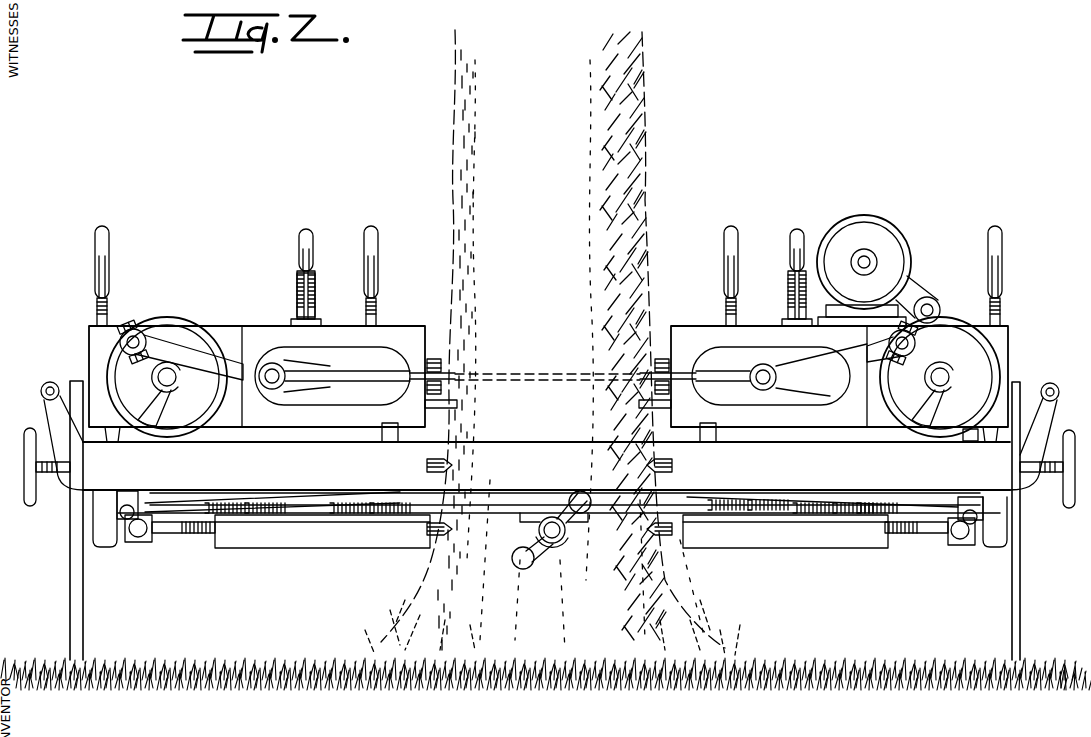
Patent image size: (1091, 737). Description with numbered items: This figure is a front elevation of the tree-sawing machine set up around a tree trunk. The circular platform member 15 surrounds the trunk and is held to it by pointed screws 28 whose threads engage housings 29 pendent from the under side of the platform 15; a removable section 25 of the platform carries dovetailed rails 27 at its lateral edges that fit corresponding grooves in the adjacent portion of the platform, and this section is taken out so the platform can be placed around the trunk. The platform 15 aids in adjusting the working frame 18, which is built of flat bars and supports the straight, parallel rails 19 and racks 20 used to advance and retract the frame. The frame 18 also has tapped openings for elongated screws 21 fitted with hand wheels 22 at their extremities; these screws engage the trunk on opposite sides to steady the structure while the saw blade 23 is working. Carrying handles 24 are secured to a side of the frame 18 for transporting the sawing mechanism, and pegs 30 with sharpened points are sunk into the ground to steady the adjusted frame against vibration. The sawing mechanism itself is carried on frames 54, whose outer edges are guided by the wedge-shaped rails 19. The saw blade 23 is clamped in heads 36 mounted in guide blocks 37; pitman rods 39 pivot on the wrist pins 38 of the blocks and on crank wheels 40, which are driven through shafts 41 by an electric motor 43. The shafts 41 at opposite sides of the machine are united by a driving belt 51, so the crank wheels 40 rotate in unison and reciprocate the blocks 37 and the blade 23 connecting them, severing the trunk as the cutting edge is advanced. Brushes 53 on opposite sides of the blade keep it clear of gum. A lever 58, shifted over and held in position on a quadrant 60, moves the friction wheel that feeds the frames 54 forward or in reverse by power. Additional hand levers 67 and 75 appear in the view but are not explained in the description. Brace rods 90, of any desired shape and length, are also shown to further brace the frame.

The platform member 15 is at (524, 495).
The working frame 18 is at (548, 466).
The rails 19 is at (111, 443).
The racks 20 is at (390, 443).
The elongated screws 21 is at (427, 463).
The hand wheels 22 is at (25, 486).
The saw blade 23 is at (477, 367).
The carrying handles 24 is at (41, 391).
The removable section 25 is at (505, 514).
The dovetailed rails 27 is at (427, 531).
The pointed screws 28 is at (175, 534).
The housings 29 is at (340, 552).
The pegs 30 is at (80, 597).
The heads 36 is at (320, 382).
The guide blocks 37 is at (312, 396).
The wrist pins 38 is at (270, 388).
The pitman rods 39 is at (214, 379).
The crank wheels 40 is at (172, 328).
The shafts 41 is at (162, 383).
The electric motor 43 is at (906, 255).
The driving belt 51 is at (443, 409).
The brushes 53 is at (441, 354).
The frames 54 is at (91, 360).
The lever 58 is at (313, 249).
The quadrant 60 is at (316, 294).
The lever 67 is at (378, 250).
The lever 75 is at (1001, 250).
The brace rods 90 is at (186, 502).